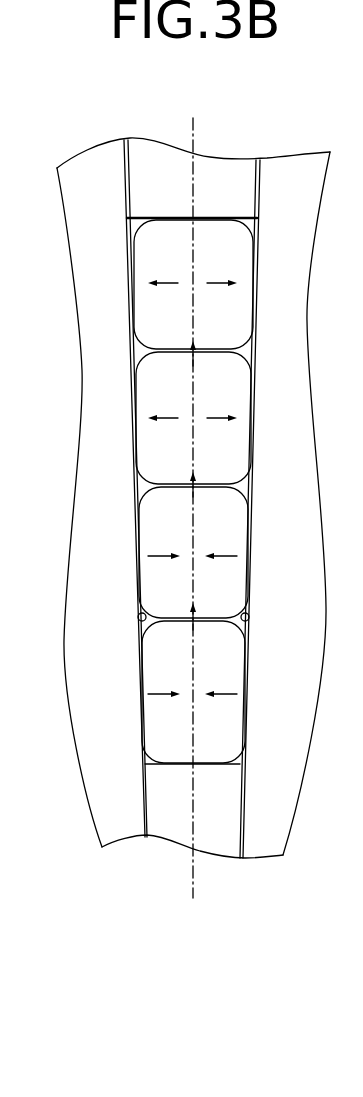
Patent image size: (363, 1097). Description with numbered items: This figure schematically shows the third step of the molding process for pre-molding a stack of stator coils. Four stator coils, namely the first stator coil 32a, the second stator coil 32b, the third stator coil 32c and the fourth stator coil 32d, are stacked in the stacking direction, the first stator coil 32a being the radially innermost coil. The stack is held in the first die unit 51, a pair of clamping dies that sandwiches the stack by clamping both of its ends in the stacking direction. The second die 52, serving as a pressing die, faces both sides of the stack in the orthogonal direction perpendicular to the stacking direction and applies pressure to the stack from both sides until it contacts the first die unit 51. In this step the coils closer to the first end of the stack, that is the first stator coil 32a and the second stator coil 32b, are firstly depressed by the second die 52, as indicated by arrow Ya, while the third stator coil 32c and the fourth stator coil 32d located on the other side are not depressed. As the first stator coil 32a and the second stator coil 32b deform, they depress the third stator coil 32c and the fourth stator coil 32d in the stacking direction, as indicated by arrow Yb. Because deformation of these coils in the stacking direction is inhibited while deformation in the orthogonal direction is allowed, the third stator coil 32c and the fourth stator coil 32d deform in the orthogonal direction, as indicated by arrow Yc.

The first die unit 51 is at (143, 150).
The second die 52 is at (128, 178).
The first stator coil 32a is at (228, 722).
The second stator coil 32b is at (235, 538).
The third stator coil 32c is at (238, 402).
The fourth stator coil 32d is at (235, 268).
The arrow Ya is at (163, 555).
The arrow Yb is at (194, 358).
The arrow Yc is at (167, 416).